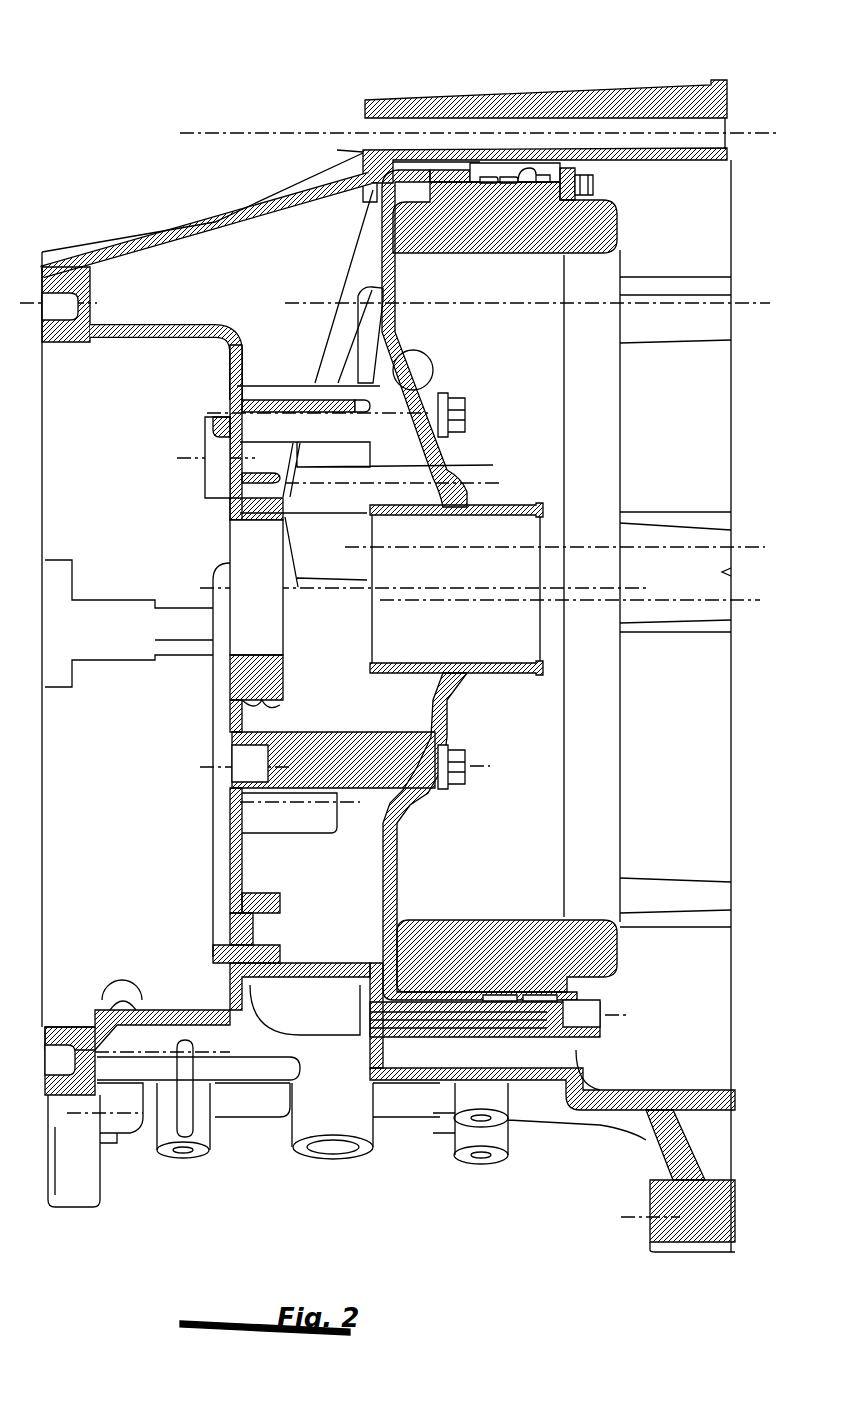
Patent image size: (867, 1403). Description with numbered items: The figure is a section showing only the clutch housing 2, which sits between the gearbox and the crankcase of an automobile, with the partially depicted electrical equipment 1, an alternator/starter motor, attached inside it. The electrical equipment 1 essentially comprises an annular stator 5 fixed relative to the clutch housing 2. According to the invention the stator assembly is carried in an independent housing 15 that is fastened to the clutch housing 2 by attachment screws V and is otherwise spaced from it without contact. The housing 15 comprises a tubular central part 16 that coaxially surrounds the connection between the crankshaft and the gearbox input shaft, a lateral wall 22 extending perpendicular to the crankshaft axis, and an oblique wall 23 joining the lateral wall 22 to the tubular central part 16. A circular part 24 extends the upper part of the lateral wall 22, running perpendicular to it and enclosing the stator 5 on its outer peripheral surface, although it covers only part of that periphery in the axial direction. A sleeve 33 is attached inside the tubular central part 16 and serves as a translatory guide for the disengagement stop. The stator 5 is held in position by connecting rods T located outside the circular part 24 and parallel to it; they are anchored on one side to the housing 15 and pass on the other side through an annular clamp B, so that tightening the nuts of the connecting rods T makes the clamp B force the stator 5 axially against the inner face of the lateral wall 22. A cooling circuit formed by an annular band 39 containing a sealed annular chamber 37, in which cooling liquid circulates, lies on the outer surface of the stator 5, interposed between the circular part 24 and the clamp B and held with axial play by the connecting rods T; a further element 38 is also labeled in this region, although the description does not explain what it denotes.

The electrical equipment 1 is at (640, 228).
The clutch housing 2 is at (287, 200).
The annular stator 5 is at (463, 218).
The housing 15 is at (362, 270).
The tubular central part 16 is at (492, 503).
The lateral wall 22 is at (380, 287).
The oblique wall 23 is at (393, 370).
The circular part 24 is at (450, 180).
The sleeve 33 is at (433, 660).
The sealed annular chamber 37 is at (498, 177).
The cage 38 is at (533, 175).
The annular band 39 is at (486, 177).
The annular clamp B is at (596, 180).
The attachment screws V is at (465, 408).
The connecting rods T is at (437, 1040).